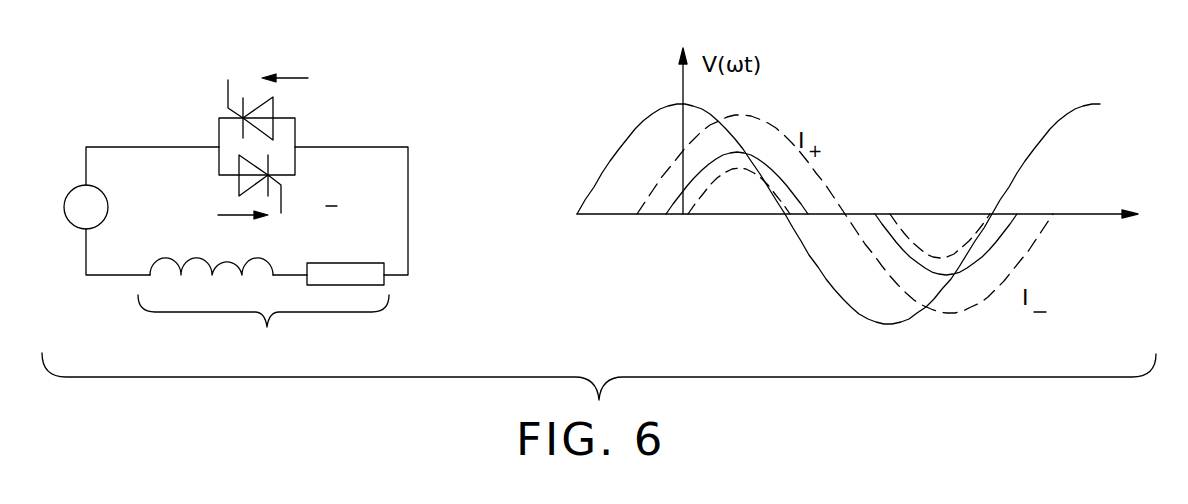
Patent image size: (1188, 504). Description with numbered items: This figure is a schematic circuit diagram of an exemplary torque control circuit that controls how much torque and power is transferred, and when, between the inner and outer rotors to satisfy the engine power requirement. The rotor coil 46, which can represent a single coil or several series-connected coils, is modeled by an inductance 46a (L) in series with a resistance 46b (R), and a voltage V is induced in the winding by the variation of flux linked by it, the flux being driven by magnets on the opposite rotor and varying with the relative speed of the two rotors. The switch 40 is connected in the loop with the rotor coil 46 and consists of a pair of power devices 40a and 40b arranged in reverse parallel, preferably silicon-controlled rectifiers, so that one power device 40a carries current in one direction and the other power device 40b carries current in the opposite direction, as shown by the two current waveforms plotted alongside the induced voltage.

The switch 40 is at (254, 184).
The power device 40a is at (238, 188).
The power device 40b is at (262, 101).
The rotor coil 46 is at (250, 288).
The inductance 46a is at (187, 258).
The resistance 46b is at (327, 263).